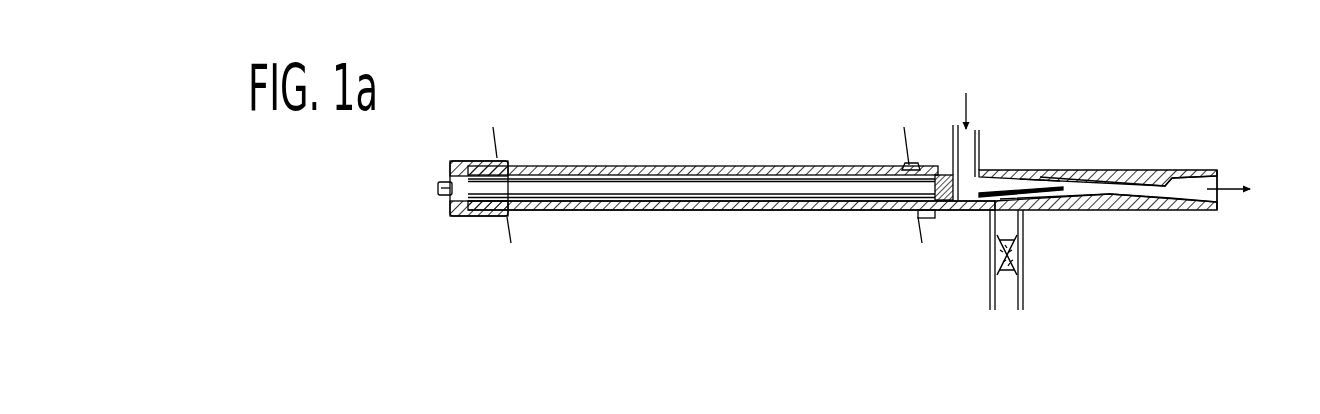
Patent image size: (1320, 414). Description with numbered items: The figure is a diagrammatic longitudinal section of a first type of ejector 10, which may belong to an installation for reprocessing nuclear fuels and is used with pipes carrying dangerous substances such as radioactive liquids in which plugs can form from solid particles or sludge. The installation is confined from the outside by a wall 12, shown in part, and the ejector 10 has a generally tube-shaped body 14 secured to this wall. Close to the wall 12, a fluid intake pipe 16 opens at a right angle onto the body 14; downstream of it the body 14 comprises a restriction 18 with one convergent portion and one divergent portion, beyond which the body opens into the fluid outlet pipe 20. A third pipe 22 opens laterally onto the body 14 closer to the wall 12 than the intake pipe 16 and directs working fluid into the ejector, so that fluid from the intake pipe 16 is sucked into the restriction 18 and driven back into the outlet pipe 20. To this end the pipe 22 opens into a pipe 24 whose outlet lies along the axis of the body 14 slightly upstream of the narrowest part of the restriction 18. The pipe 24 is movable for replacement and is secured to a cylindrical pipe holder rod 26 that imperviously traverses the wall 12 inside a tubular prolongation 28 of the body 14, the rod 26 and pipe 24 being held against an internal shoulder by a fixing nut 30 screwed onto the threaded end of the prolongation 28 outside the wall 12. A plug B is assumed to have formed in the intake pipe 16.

The ejector 10 is at (1038, 123).
The wall 12 is at (731, 166).
The body 14 is at (1123, 210).
The fluid intake pipe 16 is at (1012, 298).
The restriction 18 is at (1181, 175).
The fluid outlet pipe 20 is at (1220, 193).
The third pipe 22 is at (955, 141).
The pipe 24 is at (1044, 177).
The cylindrical pipe holder rod 26 is at (833, 177).
The tubular prolongation 28 is at (685, 214).
The fixing nut 30 is at (476, 226).
The plug B is at (1020, 222).